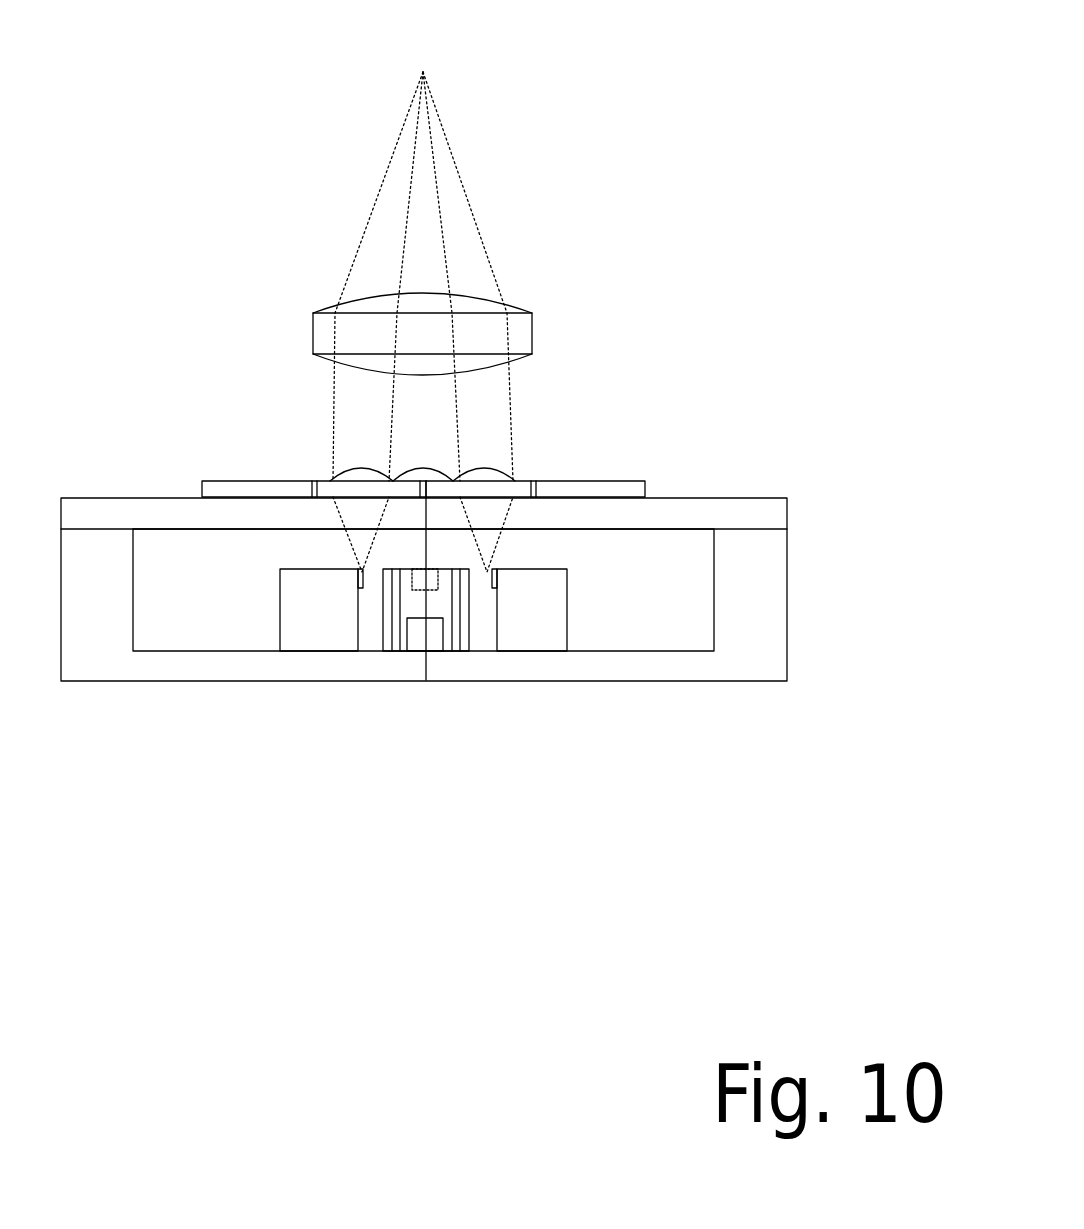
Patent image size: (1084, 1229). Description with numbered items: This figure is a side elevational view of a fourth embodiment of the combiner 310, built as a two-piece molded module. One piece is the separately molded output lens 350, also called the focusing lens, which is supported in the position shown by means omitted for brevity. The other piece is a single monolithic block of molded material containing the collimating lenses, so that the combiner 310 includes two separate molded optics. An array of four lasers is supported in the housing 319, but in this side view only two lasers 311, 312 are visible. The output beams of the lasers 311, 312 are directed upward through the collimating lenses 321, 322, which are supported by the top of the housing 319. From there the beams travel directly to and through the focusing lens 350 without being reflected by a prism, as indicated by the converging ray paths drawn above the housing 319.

The combiner 310 is at (565, 128).
The laser 311 is at (363, 588).
The laser 312 is at (492, 588).
The housing 319 is at (638, 651).
The collimating lens 321 is at (353, 470).
The collimating lens 322 is at (492, 470).
The output lens 350 is at (532, 313).